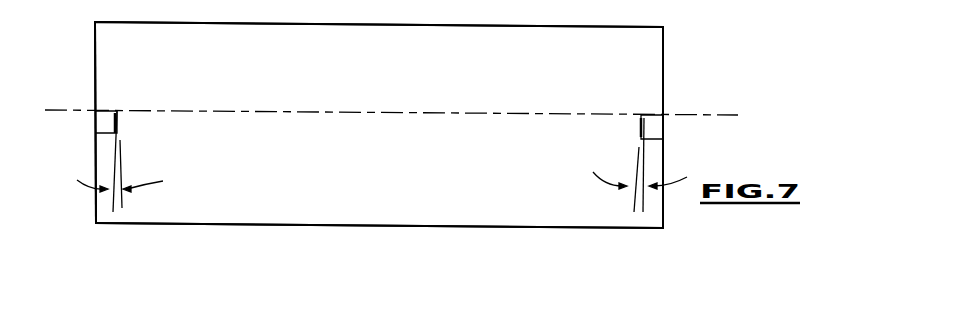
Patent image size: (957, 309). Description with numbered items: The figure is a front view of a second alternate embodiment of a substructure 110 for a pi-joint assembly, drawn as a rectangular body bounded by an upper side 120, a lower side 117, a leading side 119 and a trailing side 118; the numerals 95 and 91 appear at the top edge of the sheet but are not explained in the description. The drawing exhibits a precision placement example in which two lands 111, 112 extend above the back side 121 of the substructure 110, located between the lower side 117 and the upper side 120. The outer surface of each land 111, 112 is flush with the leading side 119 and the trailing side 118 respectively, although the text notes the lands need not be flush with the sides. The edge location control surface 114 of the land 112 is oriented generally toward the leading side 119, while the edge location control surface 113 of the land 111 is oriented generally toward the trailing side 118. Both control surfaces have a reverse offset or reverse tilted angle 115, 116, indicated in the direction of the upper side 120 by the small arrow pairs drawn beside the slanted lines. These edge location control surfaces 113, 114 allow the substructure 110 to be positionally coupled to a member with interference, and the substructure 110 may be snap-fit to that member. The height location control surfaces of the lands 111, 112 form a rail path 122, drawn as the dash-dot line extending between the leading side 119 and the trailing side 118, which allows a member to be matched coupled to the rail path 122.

The substructure 110 is at (108, 54).
The land 111 is at (110, 116).
The land 112 is at (650, 115).
The edge location control surface 113 is at (116, 122).
The edge location control surface 114 is at (641, 128).
The reverse tilted angle 115 is at (138, 161).
The reverse tilted angle 116 is at (622, 165).
The lower side 117 is at (556, 228).
The trailing side 118 is at (665, 70).
The leading side 119 is at (96, 81).
The upper side 120 is at (240, 23).
The back side 121 is at (412, 37).
The rail path 122 is at (725, 118).
The connector 95 is at (497, 5).
The housing 91 is at (687, 4).